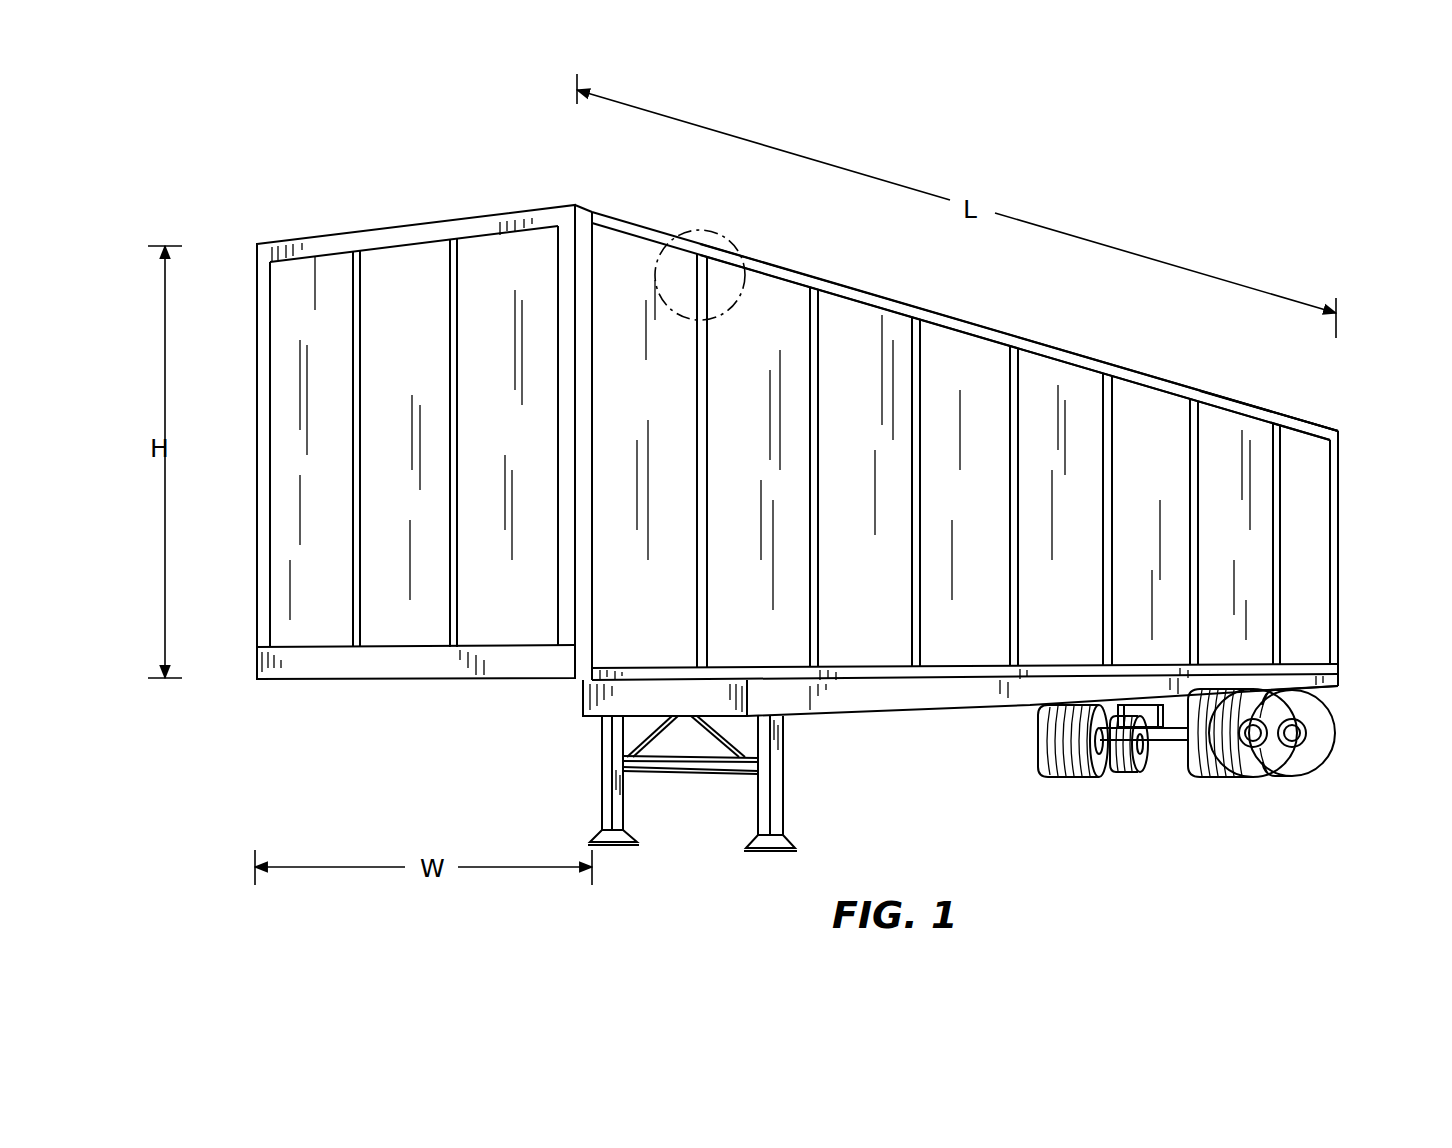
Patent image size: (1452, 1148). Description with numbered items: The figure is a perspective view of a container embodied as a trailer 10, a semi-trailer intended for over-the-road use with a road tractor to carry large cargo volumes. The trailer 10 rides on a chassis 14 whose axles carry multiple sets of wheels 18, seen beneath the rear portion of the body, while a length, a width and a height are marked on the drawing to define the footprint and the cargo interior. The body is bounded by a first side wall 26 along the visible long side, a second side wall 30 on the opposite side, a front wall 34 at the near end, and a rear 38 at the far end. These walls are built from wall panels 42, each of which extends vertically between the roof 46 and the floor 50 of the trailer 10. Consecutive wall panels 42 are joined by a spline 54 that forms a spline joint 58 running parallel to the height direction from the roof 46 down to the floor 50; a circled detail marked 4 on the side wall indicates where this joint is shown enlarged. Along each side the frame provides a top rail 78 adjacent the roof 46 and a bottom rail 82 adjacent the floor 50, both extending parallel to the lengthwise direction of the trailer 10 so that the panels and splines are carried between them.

The trailer 10 is at (305, 176).
The chassis 14 is at (852, 728).
The wheels 18 is at (1058, 778).
The first side wall 26 is at (1251, 604).
The second side wall 30 is at (251, 394).
The front wall 34 is at (286, 608).
The rear 38 is at (1360, 482).
The wall panels 42 is at (755, 402).
The roof 46 is at (1148, 379).
The floor 50 is at (958, 670).
The spline 54 is at (812, 298).
The spline joint 58 is at (824, 476).
The top rail 78 is at (1254, 411).
The bottom rail 82 is at (1320, 690).
The section line 4 is at (672, 232).